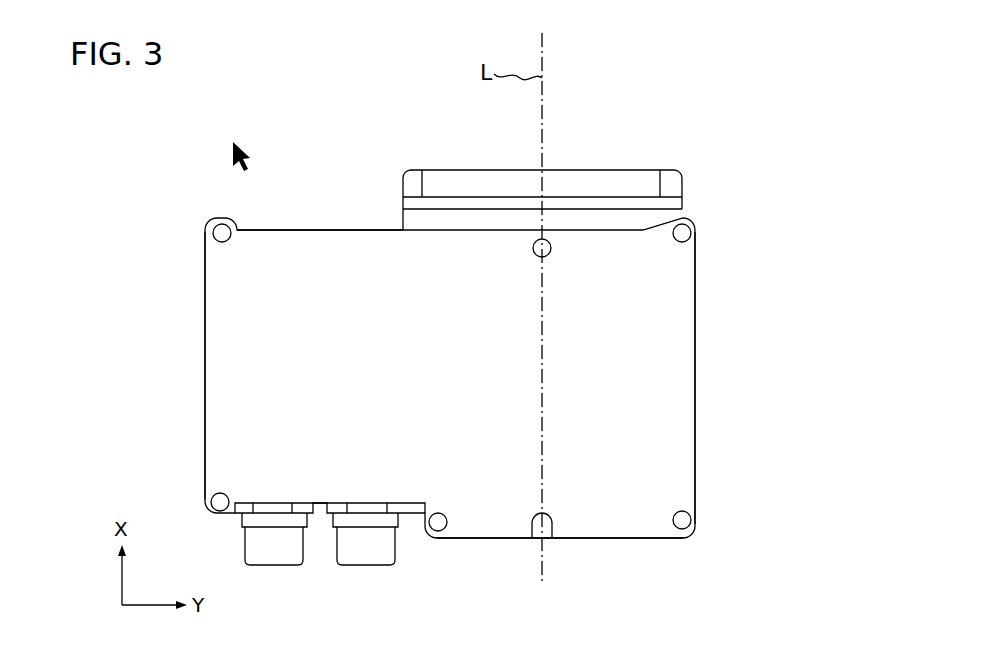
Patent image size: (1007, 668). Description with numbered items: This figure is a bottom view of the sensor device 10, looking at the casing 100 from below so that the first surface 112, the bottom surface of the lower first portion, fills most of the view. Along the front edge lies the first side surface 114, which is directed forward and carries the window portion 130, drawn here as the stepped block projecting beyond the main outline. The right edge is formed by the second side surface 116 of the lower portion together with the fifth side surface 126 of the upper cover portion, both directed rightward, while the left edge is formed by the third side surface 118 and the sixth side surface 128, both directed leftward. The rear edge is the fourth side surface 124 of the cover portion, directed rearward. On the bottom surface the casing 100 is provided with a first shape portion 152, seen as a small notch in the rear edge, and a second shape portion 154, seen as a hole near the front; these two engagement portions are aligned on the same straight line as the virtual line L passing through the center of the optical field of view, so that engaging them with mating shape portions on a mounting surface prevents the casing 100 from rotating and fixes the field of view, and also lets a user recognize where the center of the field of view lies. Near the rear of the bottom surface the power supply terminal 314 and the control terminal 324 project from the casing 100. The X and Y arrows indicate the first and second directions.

The sensor device 10 is at (712, 87).
The casing 100 is at (702, 283).
The first surface 112 is at (651, 450).
The first side surface 114 is at (321, 224).
The second side surface 116 is at (767, 378).
The fifth side surface 126 is at (702, 372).
The third side surface 118 is at (141, 365).
The sixth side surface 128 is at (198, 372).
The fourth side surface 124 is at (604, 546).
The window portion 130 is at (597, 183).
The first shape portion 152 is at (540, 548).
The second shape portion 154 is at (541, 240).
The power supply terminal 314 is at (271, 558).
The control terminal 324 is at (364, 558).